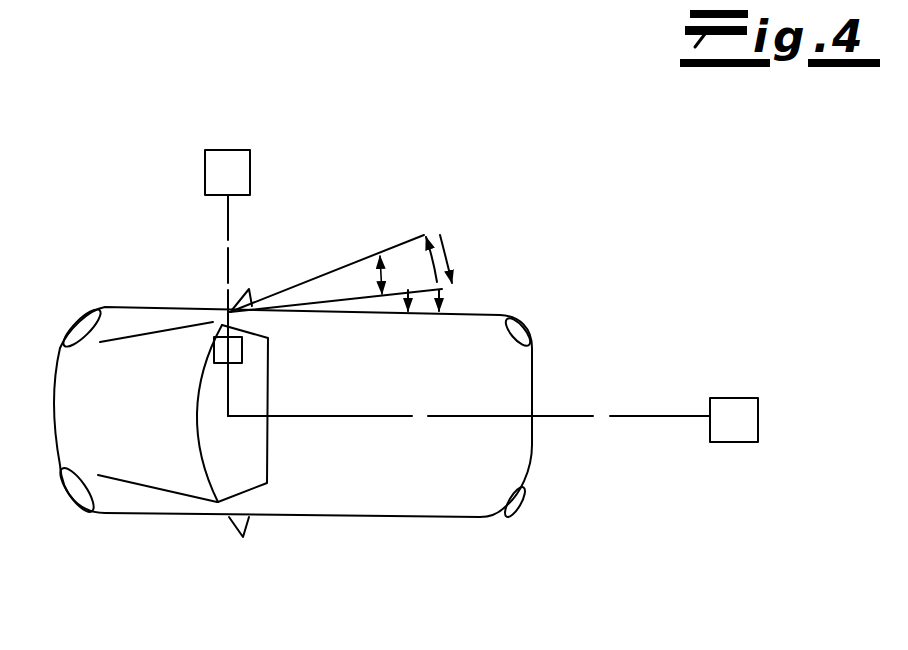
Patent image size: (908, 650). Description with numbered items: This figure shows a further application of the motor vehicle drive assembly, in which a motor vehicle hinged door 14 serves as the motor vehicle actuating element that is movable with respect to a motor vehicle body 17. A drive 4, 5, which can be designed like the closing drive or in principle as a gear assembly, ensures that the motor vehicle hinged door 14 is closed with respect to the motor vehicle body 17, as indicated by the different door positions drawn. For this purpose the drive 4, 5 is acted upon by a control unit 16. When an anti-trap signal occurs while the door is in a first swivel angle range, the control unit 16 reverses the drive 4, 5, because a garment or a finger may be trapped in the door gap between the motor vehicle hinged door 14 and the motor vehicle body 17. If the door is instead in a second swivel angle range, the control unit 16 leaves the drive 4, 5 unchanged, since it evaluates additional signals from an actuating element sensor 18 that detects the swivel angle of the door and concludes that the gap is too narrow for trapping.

The drive 4 is at (136, 310).
The drive 5 is at (207, 347).
The motor vehicle hinged door 14 is at (350, 296).
The control unit 16 is at (733, 408).
The motor vehicle body 17 is at (180, 520).
The actuating element sensor 18 is at (222, 168).